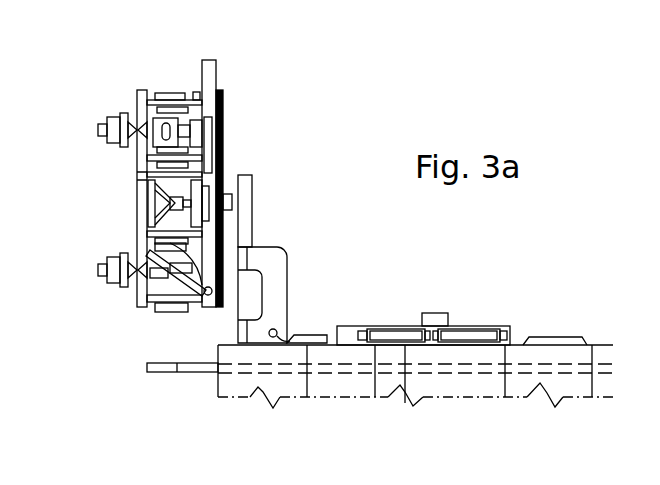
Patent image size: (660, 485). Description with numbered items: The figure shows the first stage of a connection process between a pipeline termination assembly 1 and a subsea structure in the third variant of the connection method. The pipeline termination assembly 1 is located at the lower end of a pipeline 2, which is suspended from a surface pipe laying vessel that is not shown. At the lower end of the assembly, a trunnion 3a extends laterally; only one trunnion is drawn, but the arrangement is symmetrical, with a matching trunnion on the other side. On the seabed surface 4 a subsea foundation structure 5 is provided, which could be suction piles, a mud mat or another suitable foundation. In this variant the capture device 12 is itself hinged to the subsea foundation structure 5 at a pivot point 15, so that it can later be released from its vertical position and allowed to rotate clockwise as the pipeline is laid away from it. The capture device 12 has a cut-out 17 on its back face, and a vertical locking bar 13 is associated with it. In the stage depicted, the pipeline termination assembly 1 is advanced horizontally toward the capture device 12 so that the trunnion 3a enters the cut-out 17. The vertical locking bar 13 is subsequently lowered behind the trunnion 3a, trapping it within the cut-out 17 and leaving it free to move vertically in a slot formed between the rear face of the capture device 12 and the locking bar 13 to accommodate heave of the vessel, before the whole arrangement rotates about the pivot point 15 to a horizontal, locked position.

The pipeline termination assembly 1 is at (173, 199).
The pipeline 2 is at (210, 75).
The trunnion 3a is at (206, 295).
The seabed surface 4 is at (600, 363).
The subsea foundation structure 5 is at (490, 303).
The capture device 12 is at (275, 260).
The vertical locking bar 13 is at (247, 203).
The pivot point 15 is at (282, 334).
The cut-out 17 is at (252, 295).